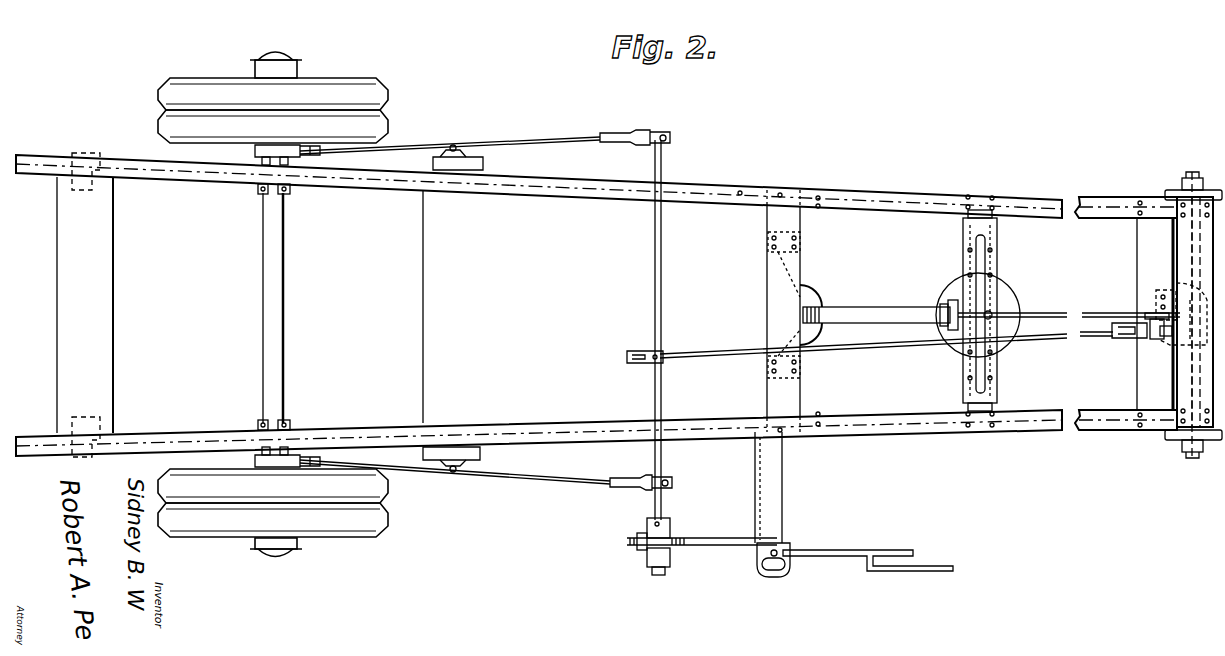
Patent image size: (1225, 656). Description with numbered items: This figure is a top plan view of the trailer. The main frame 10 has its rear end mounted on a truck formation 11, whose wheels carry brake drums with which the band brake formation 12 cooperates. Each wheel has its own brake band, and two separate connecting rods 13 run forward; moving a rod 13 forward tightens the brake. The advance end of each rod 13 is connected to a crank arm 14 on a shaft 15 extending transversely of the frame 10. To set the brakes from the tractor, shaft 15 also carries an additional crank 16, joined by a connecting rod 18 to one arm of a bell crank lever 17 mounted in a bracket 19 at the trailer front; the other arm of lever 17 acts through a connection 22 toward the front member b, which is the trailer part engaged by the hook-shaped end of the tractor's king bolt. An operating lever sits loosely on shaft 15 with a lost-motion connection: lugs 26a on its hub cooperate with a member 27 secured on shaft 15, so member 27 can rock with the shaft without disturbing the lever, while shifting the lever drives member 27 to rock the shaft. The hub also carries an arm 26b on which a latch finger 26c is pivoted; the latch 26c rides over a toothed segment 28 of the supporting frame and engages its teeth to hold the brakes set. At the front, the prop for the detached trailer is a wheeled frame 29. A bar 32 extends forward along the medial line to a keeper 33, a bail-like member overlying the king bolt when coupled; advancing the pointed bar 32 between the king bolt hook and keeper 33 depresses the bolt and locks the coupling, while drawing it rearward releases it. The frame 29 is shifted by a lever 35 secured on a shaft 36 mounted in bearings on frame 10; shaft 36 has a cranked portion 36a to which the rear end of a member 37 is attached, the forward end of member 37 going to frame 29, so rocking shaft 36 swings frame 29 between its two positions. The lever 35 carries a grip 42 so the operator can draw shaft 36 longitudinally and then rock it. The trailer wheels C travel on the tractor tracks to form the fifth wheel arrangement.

The main frame 10 is at (739, 186).
The truck formation 11 is at (286, 270).
The band brake formation 12 is at (257, 152).
The connecting rod 13 is at (549, 141).
The crank arm 14 is at (644, 129).
The shaft 15 is at (654, 298).
The crank 16 is at (641, 350).
The bell crank lever 17 is at (1156, 340).
The connecting rod 18 is at (848, 348).
The bracket 19 is at (1164, 340).
The connection 22 is at (1106, 338).
The lug construction 26a is at (634, 583).
The arm 26b is at (647, 556).
The latch finger 26c is at (636, 539).
The member 27 is at (665, 524).
The segment 28 is at (669, 540).
The wheeled frame 29 is at (997, 261).
The bar 32 is at (1100, 312).
The keeper 33 is at (1180, 282).
The lever 35 is at (832, 551).
The shaft 36 is at (783, 483).
The cranked portion 36a is at (812, 292).
The member 37 is at (900, 306).
The grip 42 is at (773, 578).
The wheels C is at (1170, 190).
The member b is at (1188, 260).